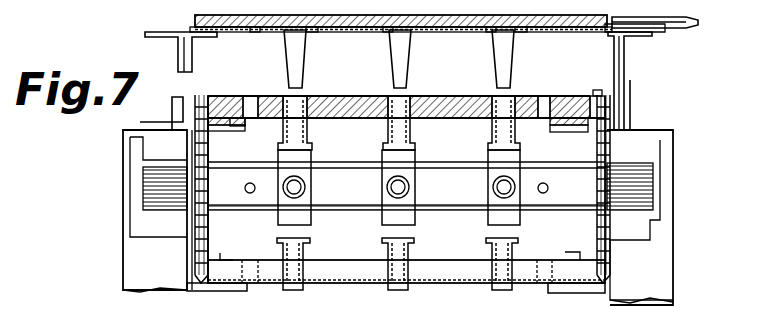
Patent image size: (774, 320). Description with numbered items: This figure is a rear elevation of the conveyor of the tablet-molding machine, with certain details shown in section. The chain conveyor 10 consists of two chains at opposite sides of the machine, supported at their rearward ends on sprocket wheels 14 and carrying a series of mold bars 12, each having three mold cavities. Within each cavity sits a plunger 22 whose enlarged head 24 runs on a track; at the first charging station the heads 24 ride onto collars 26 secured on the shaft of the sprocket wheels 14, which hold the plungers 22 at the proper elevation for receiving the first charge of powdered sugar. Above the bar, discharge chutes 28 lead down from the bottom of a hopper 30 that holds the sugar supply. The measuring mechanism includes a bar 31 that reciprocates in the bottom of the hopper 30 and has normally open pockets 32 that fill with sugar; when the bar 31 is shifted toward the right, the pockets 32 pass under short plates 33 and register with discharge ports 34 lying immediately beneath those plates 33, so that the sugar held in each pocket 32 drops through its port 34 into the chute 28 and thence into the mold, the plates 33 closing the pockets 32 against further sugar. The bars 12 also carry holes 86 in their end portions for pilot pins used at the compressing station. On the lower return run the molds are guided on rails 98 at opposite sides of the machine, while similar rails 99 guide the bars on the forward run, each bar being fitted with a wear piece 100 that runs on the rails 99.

The chain conveyor 10 is at (210, 232).
The mold bar 12 is at (443, 98).
The sprocket wheel 14 is at (210, 180).
The plunger 22 is at (357, 108).
The head 24 is at (386, 151).
The collar 26 is at (312, 217).
The discharge chute 28 is at (305, 54).
The hopper 30 is at (195, 22).
The bar 31 is at (567, 33).
The pocket 32 is at (262, 31).
The short plate 33 is at (312, 32).
The discharge port 34 is at (288, 40).
The hole 86 is at (250, 97).
The rail 98 is at (235, 289).
The rail 99 is at (228, 131).
The wear piece 100 is at (603, 108).